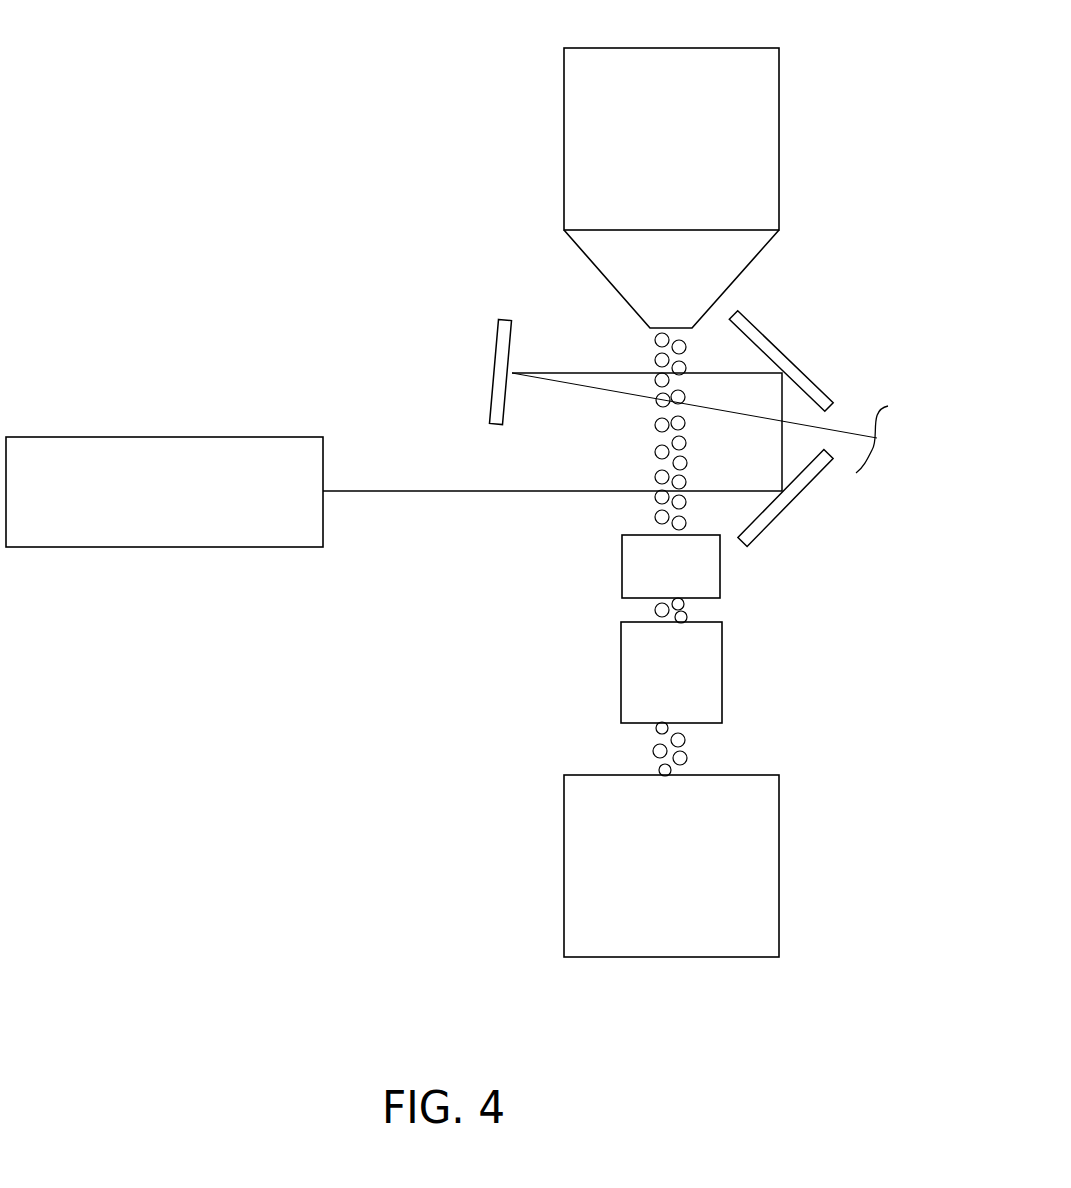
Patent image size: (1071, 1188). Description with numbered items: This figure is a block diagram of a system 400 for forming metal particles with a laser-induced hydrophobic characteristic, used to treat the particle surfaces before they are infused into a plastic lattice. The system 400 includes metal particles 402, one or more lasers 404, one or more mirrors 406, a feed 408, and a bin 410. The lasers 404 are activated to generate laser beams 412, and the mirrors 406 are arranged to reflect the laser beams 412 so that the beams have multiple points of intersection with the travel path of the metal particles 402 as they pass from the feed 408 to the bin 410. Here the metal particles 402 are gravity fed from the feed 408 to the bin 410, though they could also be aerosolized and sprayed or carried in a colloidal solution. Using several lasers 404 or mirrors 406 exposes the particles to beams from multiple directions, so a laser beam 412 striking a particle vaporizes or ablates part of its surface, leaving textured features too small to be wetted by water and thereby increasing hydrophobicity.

The system 400 is at (110, 92).
The metal particles 402 is at (638, 752).
The laser 404 is at (223, 508).
The mirror 406 is at (497, 343).
The feed 408 is at (723, 152).
The bin 410 is at (719, 882).
The laser beam 412 is at (608, 372).